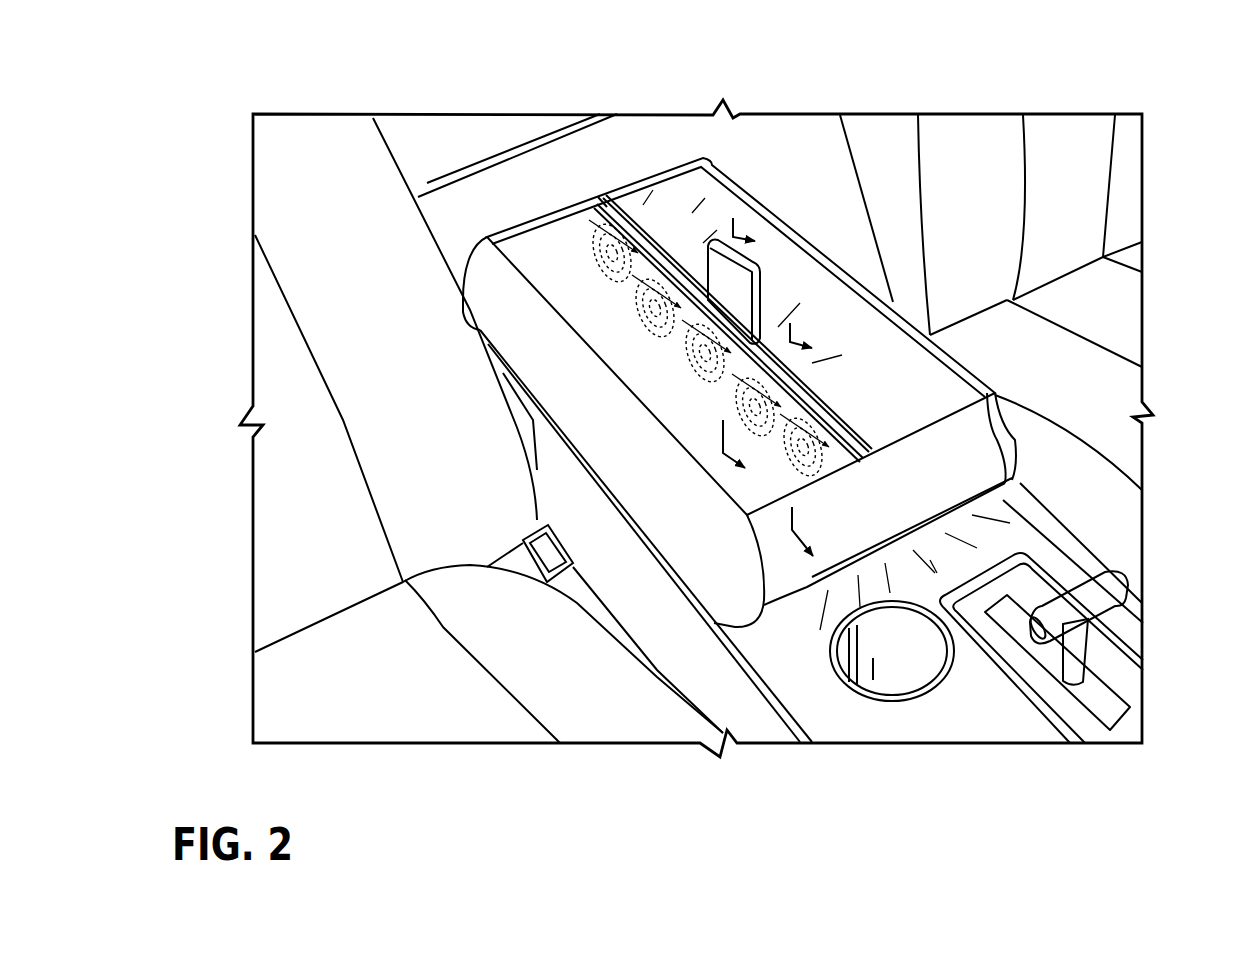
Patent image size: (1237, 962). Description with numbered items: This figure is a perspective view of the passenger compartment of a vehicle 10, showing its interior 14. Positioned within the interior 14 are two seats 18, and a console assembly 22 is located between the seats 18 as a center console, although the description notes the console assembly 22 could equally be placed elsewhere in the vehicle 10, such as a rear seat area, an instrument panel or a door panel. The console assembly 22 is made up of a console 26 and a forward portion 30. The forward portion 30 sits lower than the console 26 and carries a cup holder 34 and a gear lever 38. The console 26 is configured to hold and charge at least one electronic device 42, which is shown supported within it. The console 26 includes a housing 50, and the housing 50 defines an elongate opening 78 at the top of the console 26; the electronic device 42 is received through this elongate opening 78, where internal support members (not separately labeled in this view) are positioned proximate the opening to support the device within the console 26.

The vehicle 10 is at (773, 105).
The interior 14 is at (1080, 173).
The seat 18 is at (957, 198).
The console assembly 22 is at (552, 190).
The console 26 is at (505, 287).
The forward portion 30 is at (793, 667).
The cup holder 34 is at (892, 667).
The gear lever 38 is at (1077, 655).
The electronic device 42 is at (677, 240).
The housing 50 is at (548, 257).
The elongate opening 78 is at (771, 323).